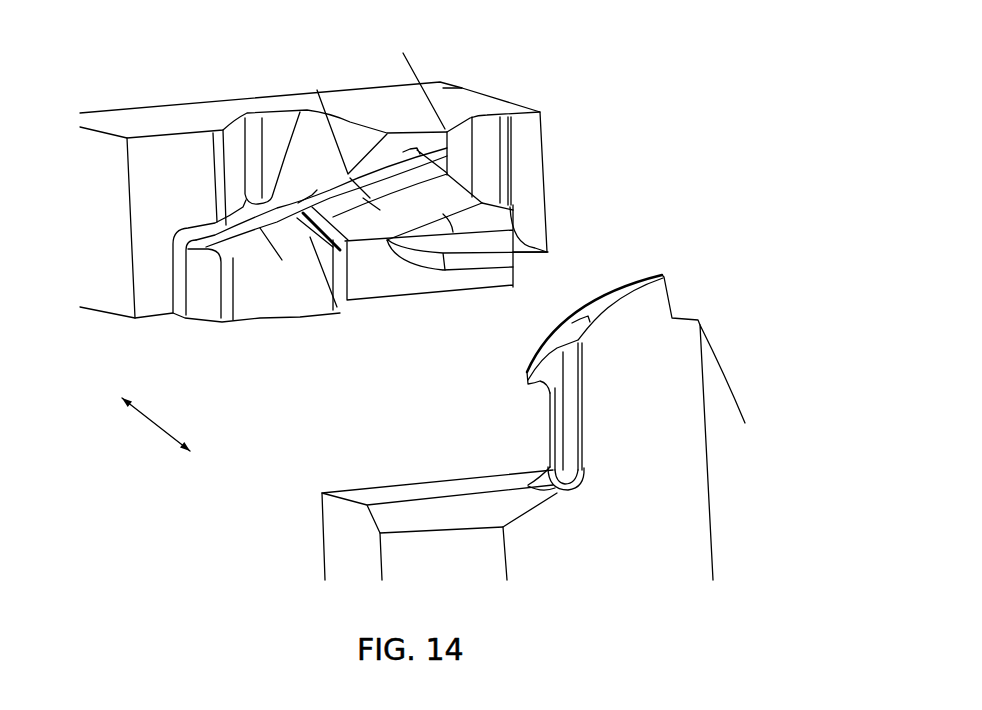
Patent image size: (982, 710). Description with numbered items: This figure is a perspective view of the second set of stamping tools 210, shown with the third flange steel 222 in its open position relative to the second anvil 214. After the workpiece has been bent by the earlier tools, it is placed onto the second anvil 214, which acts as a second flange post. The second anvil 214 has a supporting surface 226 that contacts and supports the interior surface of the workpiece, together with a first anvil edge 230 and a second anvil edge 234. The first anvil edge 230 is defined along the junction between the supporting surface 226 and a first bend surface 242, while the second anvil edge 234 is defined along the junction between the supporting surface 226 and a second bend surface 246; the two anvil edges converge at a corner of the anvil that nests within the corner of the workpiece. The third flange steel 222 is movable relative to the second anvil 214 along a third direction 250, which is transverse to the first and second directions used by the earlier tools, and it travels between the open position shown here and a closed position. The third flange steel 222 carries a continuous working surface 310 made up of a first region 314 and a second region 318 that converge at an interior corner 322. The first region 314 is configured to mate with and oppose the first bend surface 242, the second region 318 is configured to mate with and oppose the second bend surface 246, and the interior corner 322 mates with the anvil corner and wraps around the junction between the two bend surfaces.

The second set of stamping tools 210 is at (708, 102).
The second anvil 214 is at (687, 460).
The third flange steel 222 is at (474, 102).
The supporting surface 226 is at (580, 318).
The first anvil edge 230 is at (527, 382).
The second anvil edge 234 is at (620, 290).
The first bend surface 242 is at (533, 392).
The second bend surface 246 is at (665, 278).
The third direction 250 is at (155, 427).
The continuous working surface 310 is at (508, 194).
The first region 314 is at (233, 277).
The second region 318 is at (403, 53).
The interior corner 322 is at (318, 218).